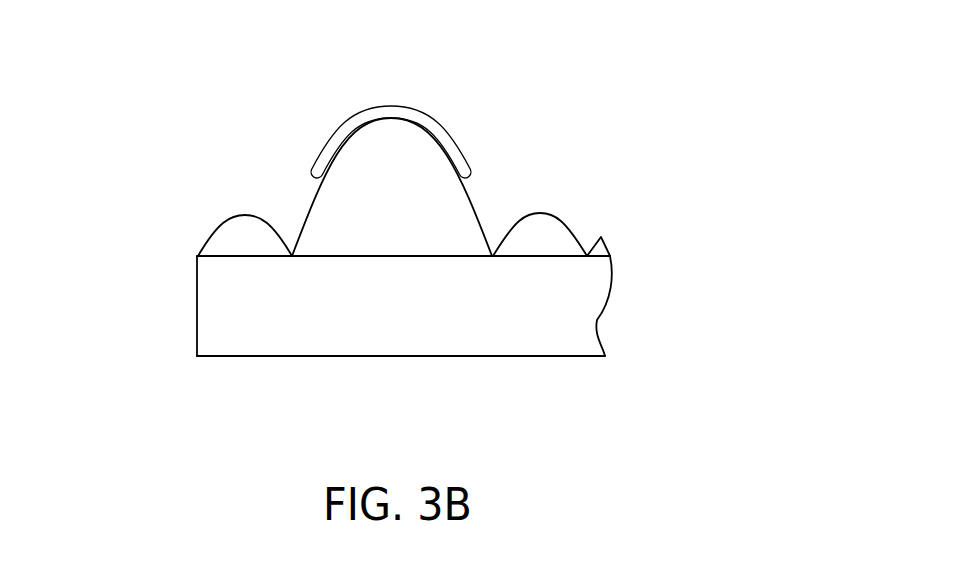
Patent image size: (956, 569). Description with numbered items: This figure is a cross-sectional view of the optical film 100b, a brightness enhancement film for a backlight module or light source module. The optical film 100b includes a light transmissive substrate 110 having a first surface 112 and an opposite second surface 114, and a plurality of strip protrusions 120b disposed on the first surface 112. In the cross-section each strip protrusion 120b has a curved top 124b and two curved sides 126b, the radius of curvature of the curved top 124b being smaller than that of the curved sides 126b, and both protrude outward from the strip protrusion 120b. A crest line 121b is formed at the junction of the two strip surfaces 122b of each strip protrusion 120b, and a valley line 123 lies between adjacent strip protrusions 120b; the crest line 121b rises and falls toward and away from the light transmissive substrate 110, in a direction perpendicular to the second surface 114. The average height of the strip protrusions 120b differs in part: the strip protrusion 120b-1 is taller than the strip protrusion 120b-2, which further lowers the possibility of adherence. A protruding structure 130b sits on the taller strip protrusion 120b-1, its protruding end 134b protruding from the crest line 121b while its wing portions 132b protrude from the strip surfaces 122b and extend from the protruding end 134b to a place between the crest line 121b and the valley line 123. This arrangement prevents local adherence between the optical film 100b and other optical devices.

The optical film 100b is at (697, 408).
The light transmissive substrate 110 is at (577, 318).
The first surface 112 is at (566, 229).
The second surface 114 is at (537, 357).
The strip protrusion 120b is at (327, 137).
The strip protrusion 120b-1 is at (365, 162).
The strip protrusion 120b-2 is at (232, 232).
The crest line 121b is at (540, 254).
The strip surface 122b is at (313, 198).
The valley line 123 is at (588, 255).
The curved top 124b is at (243, 215).
The curved side 126b is at (207, 237).
The protruding structure 130b is at (470, 163).
The wing portion 132b is at (447, 137).
The protruding end 134b is at (380, 107).